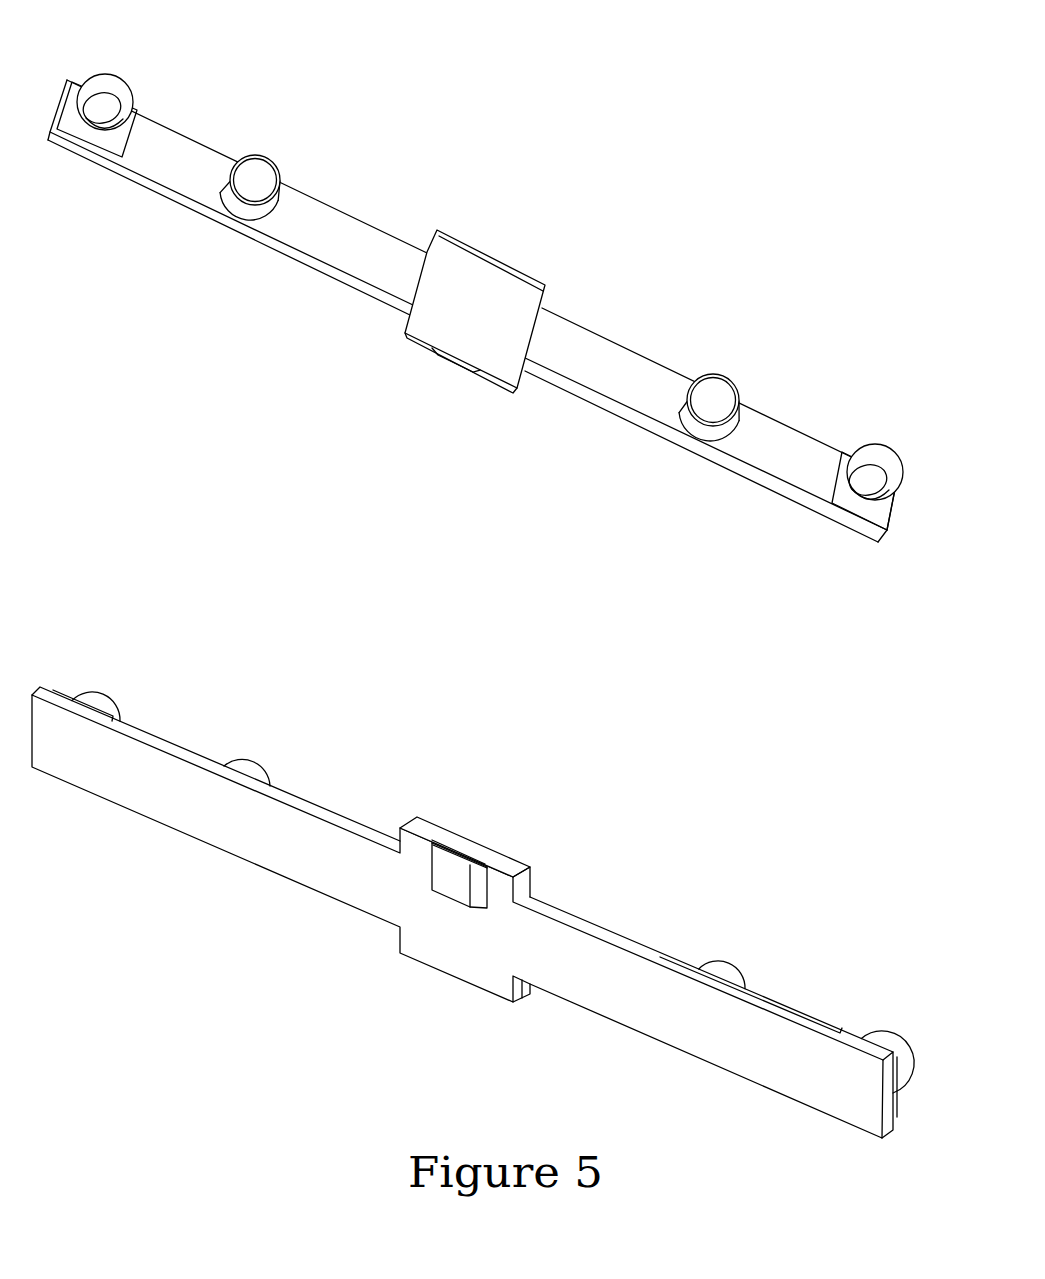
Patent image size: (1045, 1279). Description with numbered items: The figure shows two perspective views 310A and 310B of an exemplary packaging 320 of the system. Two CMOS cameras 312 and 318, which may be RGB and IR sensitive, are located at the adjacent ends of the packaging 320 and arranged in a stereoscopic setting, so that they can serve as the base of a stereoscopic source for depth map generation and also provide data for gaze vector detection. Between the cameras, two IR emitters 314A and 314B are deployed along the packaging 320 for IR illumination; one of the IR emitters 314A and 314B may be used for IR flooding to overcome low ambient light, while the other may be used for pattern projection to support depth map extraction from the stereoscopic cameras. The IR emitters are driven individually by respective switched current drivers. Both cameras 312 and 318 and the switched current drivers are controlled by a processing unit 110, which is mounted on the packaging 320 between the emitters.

The processing unit 110 is at (498, 260).
The perspective view 310A is at (836, 82).
The perspective view 310B is at (836, 813).
The CMOS camera 312 is at (124, 83).
The IR emitter 314A is at (272, 161).
The IR emitter 314B is at (731, 380).
The CMOS camera 318 is at (890, 447).
The packaging 320 is at (613, 386).